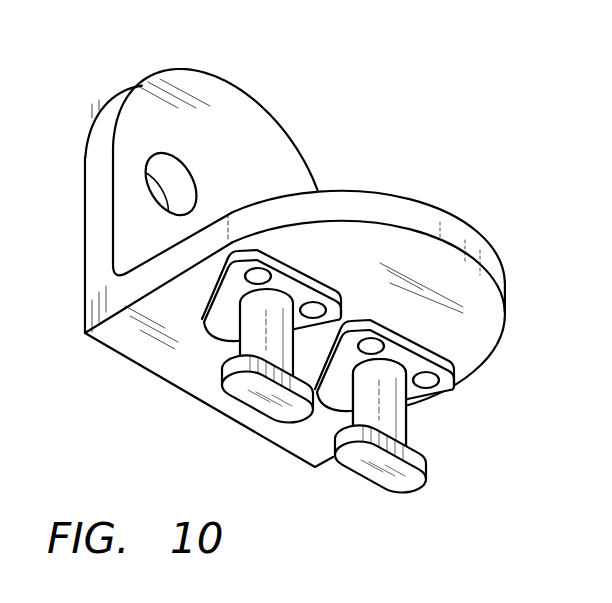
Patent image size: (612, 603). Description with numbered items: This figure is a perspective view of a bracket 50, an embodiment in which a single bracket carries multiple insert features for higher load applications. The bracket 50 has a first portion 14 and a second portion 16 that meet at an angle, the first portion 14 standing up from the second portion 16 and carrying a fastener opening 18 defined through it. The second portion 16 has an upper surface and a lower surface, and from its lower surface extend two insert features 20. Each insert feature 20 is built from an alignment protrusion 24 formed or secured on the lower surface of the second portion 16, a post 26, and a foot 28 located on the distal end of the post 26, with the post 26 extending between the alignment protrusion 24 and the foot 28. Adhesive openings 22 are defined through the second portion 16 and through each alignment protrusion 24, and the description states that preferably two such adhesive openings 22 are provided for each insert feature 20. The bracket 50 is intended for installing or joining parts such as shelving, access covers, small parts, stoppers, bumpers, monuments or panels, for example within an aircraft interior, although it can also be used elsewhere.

The first portion 14 is at (174, 172).
The second portion 16 is at (466, 230).
The fastener opening 18 is at (170, 184).
The insert feature 20 is at (176, 405).
The adhesive opening 22 is at (432, 380).
The alignment protrusion 24 is at (313, 280).
The post 26 is at (238, 347).
The foot 28 is at (263, 408).
The bracket 50 is at (281, 293).